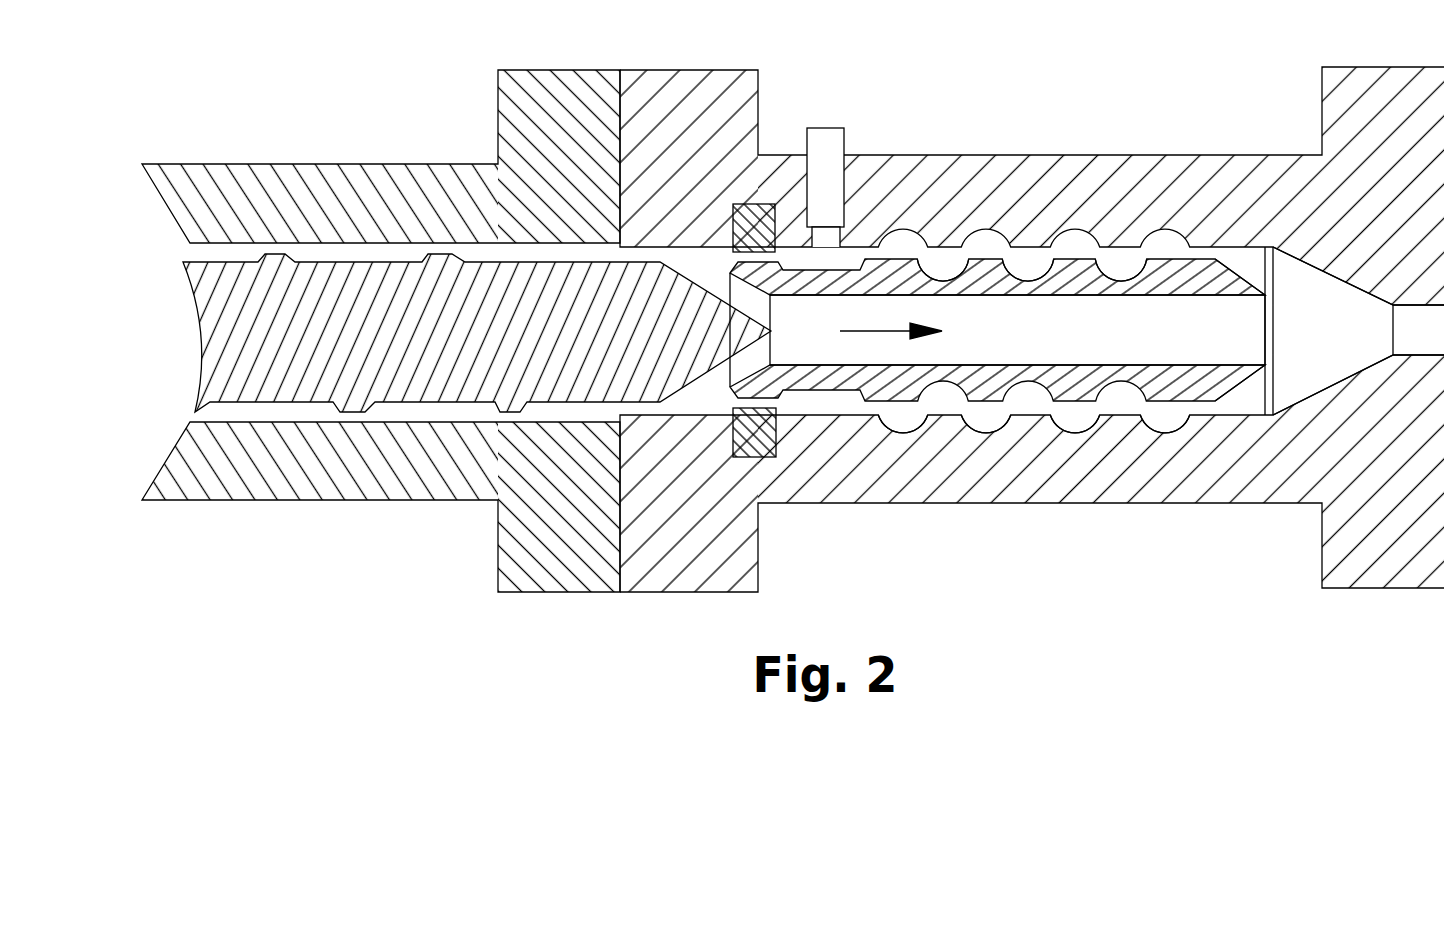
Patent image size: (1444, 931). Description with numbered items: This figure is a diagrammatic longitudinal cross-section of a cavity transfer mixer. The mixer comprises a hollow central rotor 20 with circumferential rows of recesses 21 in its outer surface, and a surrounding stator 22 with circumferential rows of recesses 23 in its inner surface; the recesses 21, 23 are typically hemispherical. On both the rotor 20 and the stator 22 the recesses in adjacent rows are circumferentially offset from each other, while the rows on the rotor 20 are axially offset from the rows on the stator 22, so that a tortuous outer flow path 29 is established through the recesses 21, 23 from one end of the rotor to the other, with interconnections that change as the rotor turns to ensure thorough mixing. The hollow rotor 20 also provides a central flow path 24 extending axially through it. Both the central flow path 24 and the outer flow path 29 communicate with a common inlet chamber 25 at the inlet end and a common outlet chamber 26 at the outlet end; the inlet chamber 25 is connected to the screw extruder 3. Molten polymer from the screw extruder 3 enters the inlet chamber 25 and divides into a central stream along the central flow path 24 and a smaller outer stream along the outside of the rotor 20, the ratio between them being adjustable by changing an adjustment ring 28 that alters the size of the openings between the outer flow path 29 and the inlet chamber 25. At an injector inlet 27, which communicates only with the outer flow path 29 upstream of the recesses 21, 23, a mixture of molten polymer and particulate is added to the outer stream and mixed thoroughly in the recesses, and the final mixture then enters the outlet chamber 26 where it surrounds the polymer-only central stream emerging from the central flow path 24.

The screw extruder 3 is at (237, 470).
The hollow central rotor 20 is at (1205, 259).
The recesses in rotor outer surface 21 is at (1025, 275).
The stator 22 is at (1177, 470).
The recesses in stator inner surface 23 is at (1075, 418).
The central flow path 24 is at (995, 342).
The inlet chamber 25 is at (705, 393).
The outlet chamber 26 is at (1305, 357).
The injector inlet 27 is at (830, 143).
The adjustment ring 28 is at (754, 228).
The outer flow path 29 is at (848, 259).